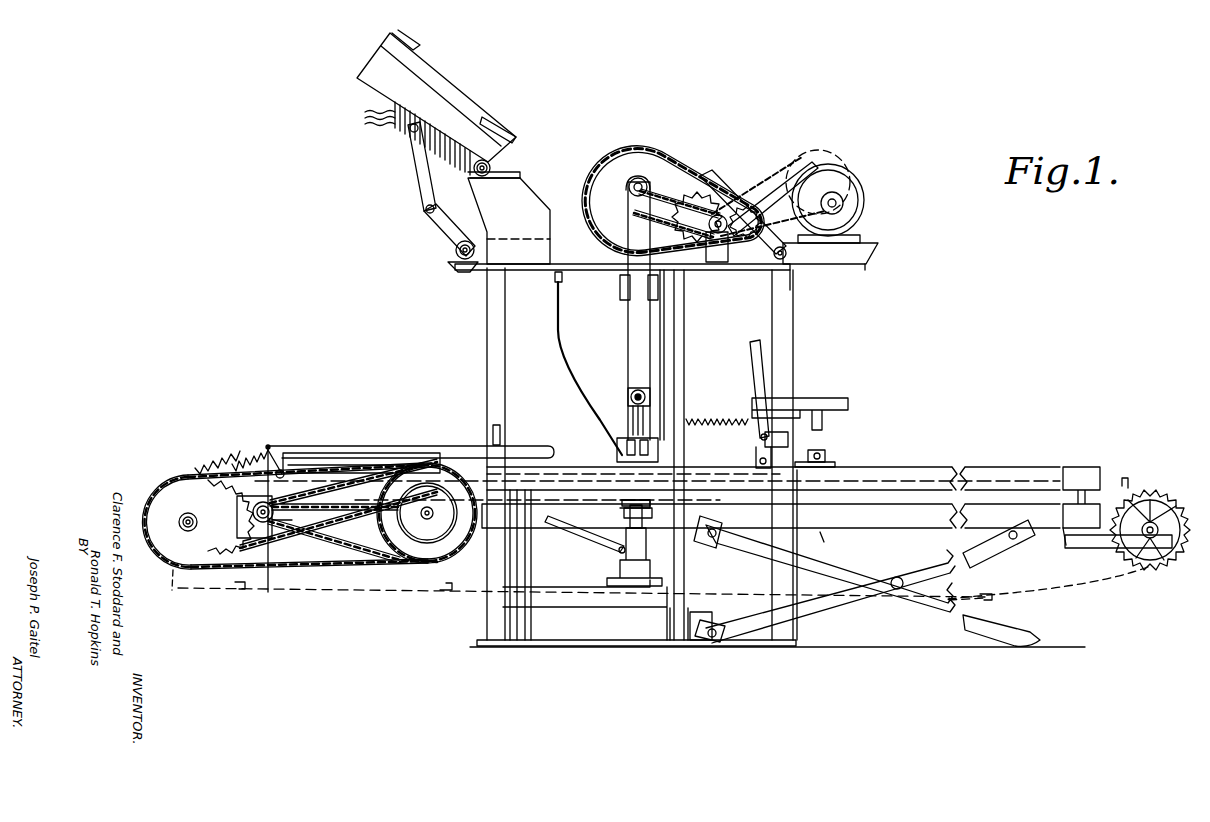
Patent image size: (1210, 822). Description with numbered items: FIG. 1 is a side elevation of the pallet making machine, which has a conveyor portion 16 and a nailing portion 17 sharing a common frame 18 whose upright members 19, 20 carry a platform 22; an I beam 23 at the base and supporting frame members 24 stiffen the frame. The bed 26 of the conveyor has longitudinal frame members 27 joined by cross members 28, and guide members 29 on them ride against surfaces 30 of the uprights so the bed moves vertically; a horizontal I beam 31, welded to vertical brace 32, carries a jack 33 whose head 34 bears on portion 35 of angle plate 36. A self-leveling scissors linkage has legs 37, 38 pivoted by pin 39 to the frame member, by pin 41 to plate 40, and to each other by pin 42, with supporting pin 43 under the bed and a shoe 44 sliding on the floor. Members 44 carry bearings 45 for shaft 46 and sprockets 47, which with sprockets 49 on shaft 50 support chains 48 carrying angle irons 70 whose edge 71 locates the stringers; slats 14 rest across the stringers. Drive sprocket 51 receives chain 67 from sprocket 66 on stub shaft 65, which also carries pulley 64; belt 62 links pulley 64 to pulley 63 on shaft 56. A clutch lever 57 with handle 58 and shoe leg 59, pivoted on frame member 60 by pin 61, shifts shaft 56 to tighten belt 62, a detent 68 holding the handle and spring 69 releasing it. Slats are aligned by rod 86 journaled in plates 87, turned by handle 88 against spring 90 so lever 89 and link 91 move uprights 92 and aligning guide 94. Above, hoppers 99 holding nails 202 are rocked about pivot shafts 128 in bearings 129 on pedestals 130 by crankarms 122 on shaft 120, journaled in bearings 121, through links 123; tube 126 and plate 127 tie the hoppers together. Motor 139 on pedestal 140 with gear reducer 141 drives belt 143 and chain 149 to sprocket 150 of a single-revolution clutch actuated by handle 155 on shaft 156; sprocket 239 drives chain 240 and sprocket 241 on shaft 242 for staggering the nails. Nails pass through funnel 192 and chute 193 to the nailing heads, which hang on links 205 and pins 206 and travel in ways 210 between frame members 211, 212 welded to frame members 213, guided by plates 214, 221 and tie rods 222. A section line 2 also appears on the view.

The slat 14 is at (626, 750).
The frame 18 is at (165, 695).
The section line 2 is at (915, 47).
The conveyor portion 16 is at (1104, 466).
The nailing portion 17 is at (846, 268).
The upright member 19 is at (796, 318).
The upright member 20 is at (486, 333).
The platform 22 is at (520, 276).
The I beam 23 is at (668, 620).
The supporting frame member 24 is at (686, 355).
The bed 26 is at (905, 534).
The longitudinal frame member 27 is at (832, 544).
The cross member 28 is at (1062, 548).
The guide member 29 is at (472, 478).
The surface 30 is at (460, 592).
The horizontal I beam 31 is at (552, 605).
The vertical brace 32 is at (540, 530).
The jack 33 is at (622, 566).
The jack head 34 is at (630, 535).
The angle plate portion 35 is at (624, 512).
The angle plate 36 is at (636, 498).
The scissors leg 37 is at (870, 568).
The scissors leg 38 is at (975, 572).
The pin 39 is at (715, 548).
The plate 40 is at (700, 612).
The pin 41 is at (712, 645).
The pin 42 is at (893, 590).
The supporting pin 43 is at (1010, 542).
The shoe 44 is at (1092, 556).
The bearing 45 is at (1186, 508).
The shaft 46 is at (1150, 518).
The sprocket 47 is at (1146, 578).
The chain 48 is at (1088, 587).
The sprocket 49 is at (186, 574).
The shaft 50 is at (195, 505).
The drive sprocket 51 is at (208, 470).
The shaft 56 is at (266, 592).
The clutch lever 57 is at (320, 440).
The handle 58 is at (420, 442).
The shoe leg 59 is at (290, 512).
The frame member 60 is at (326, 468).
The pin 61 is at (285, 462).
The belt 62 is at (352, 547).
The pulley 63 is at (240, 538).
The pulley 64 is at (432, 558).
The stub shaft 65 is at (427, 514).
The sprocket 66 is at (434, 514).
The chain 67 is at (292, 555).
The detent member 68 is at (493, 415).
The spring 69 is at (244, 458).
The angle iron 70 is at (235, 595).
The edge 71 is at (994, 598).
The rod 86 is at (762, 437).
The plate 87 is at (826, 430).
The handle 88 is at (752, 366).
The lever 89 is at (756, 452).
The spring 90 is at (712, 412).
The link 91 is at (822, 450).
The upright 92 is at (830, 460).
The aligning guide 94 is at (967, 462).
The hopper 99 is at (442, 72).
The shaft 120 is at (456, 254).
The bearing 121 is at (456, 272).
The crankarm 122 is at (440, 232).
The link 123 is at (420, 177).
The tube 126 is at (510, 150).
The plate 127 is at (500, 120).
The pivot shaft 128 is at (490, 168).
The bearing 129 is at (500, 176).
The pedestal 130 is at (548, 198).
The motor 139 is at (866, 192).
The pedestal 140 is at (866, 252).
The gear reducer 141 is at (828, 164).
The belt 143 is at (772, 175).
The chain 149 is at (712, 190).
The sprocket 150 is at (618, 148).
The handle 155 is at (740, 165).
The shaft 156 is at (786, 260).
The funnel 192 is at (568, 276).
The chute 193 is at (553, 345).
The nail 202 is at (400, 138).
The link 205 is at (628, 318).
The pin 206 is at (628, 390).
The way 210 is at (640, 415).
The frame member 211 is at (665, 325).
The frame member 212 is at (628, 352).
The frame member 213 is at (550, 452).
The plate 214 is at (620, 292).
The plate 221 is at (617, 456).
The tie rod 222 is at (630, 412).
The sprocket 239 is at (650, 168).
The chain 240 is at (680, 160).
The sprocket 241 is at (740, 200).
The shaft 242 is at (716, 262).